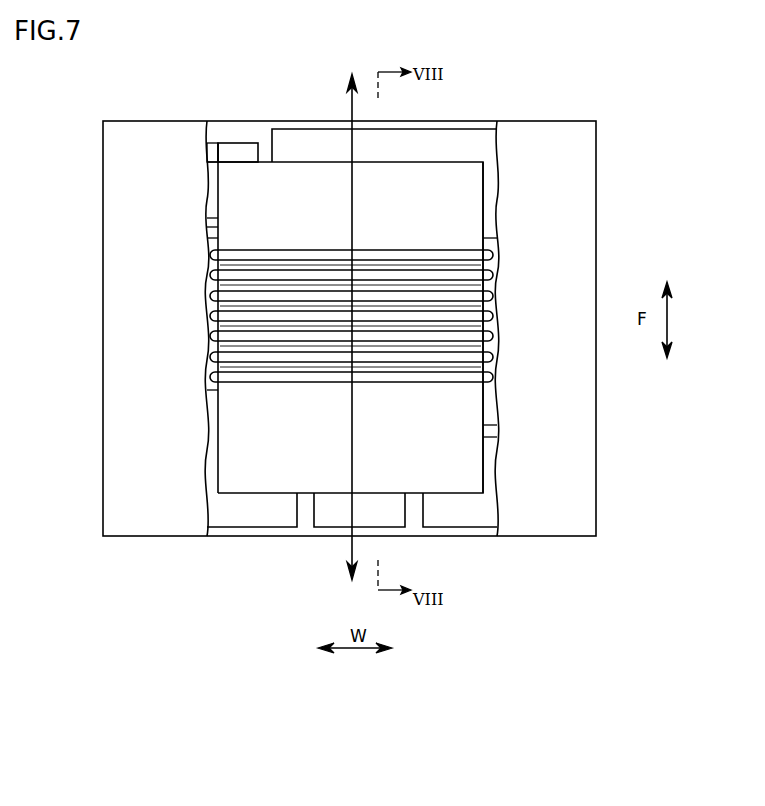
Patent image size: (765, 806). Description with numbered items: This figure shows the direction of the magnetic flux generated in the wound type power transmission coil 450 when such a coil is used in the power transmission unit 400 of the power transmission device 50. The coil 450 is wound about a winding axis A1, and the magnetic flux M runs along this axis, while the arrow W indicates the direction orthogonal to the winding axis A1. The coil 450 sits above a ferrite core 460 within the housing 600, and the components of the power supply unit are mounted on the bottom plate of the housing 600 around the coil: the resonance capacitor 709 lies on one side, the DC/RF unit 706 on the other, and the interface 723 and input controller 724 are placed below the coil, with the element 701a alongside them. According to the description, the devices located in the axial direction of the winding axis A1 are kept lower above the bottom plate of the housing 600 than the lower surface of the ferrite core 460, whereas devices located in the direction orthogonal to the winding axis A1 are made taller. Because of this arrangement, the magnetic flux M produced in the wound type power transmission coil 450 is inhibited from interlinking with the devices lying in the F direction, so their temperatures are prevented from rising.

The power transmission device 50 is at (581, 545).
The power transmission unit 400 is at (350, 274).
The wound type power transmission coil 450 is at (247, 253).
The ferrite core 460 is at (300, 195).
The housing 600 is at (535, 510).
The DC/RF unit 706 is at (476, 145).
The resonance capacitor 709 is at (228, 142).
The interface 723 is at (248, 510).
The input controller 724 is at (326, 510).
The opening 701a is at (461, 510).
The winding axis A1 is at (353, 192).